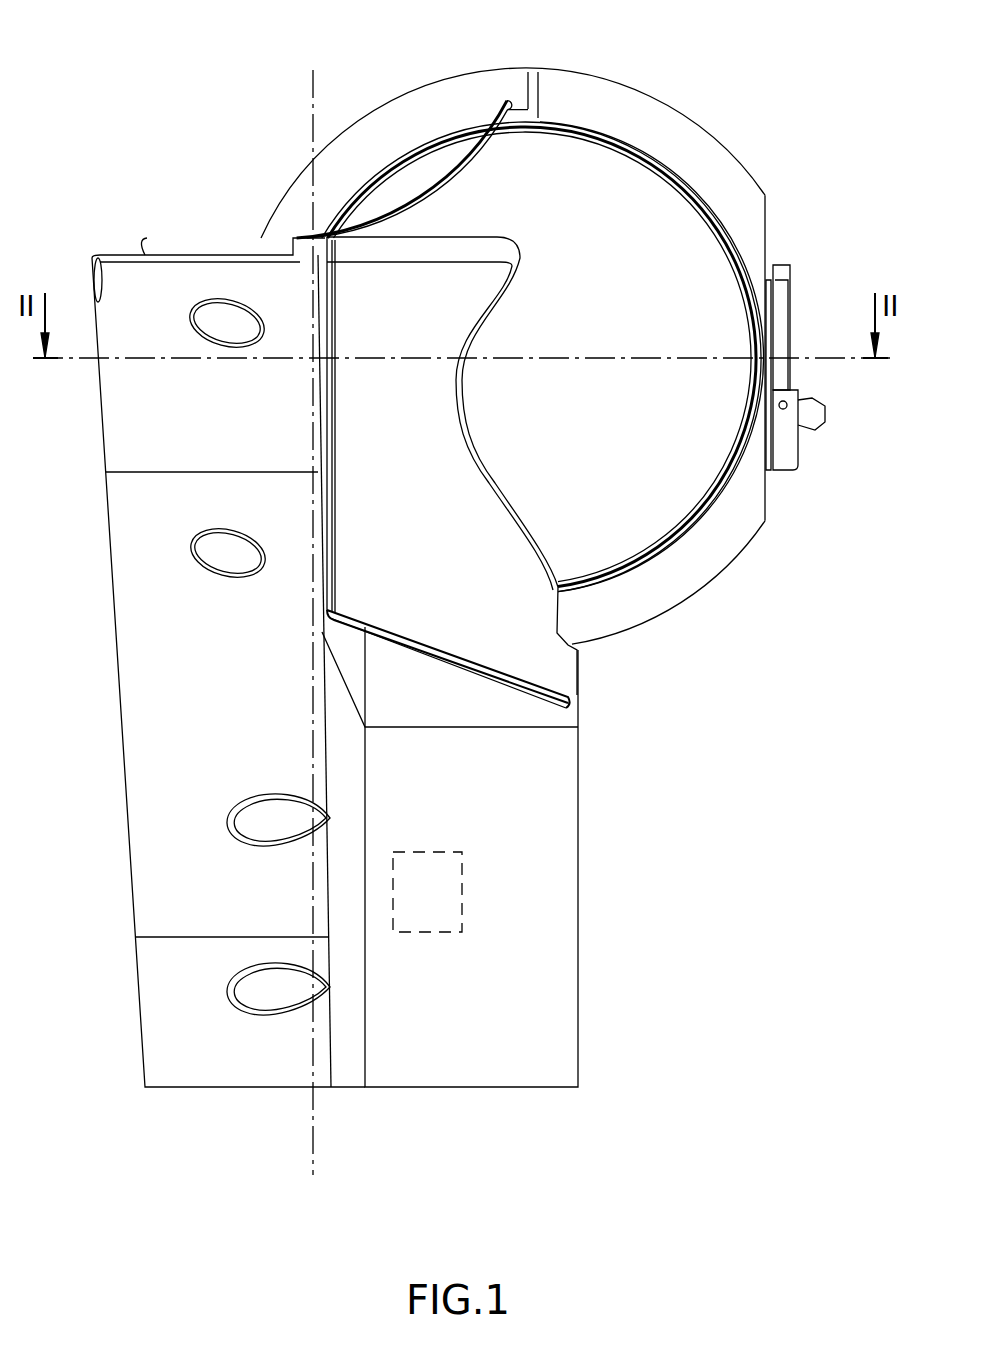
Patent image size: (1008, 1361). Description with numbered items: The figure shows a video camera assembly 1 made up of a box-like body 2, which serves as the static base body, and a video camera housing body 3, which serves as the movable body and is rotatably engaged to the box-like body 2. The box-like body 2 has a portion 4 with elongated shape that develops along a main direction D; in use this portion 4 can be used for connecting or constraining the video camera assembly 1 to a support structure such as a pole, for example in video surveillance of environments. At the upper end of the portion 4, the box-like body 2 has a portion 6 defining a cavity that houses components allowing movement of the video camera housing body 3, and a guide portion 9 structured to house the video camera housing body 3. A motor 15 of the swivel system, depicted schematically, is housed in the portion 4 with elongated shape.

The video camera assembly 1 is at (797, 42).
The box-like body 2 is at (128, 547).
The video camera housing body 3 is at (748, 526).
The portion with elongated shape 4 is at (153, 877).
The portion defining a cavity 6 is at (640, 522).
The guide portion 9 is at (537, 660).
The motor 15 is at (462, 890).